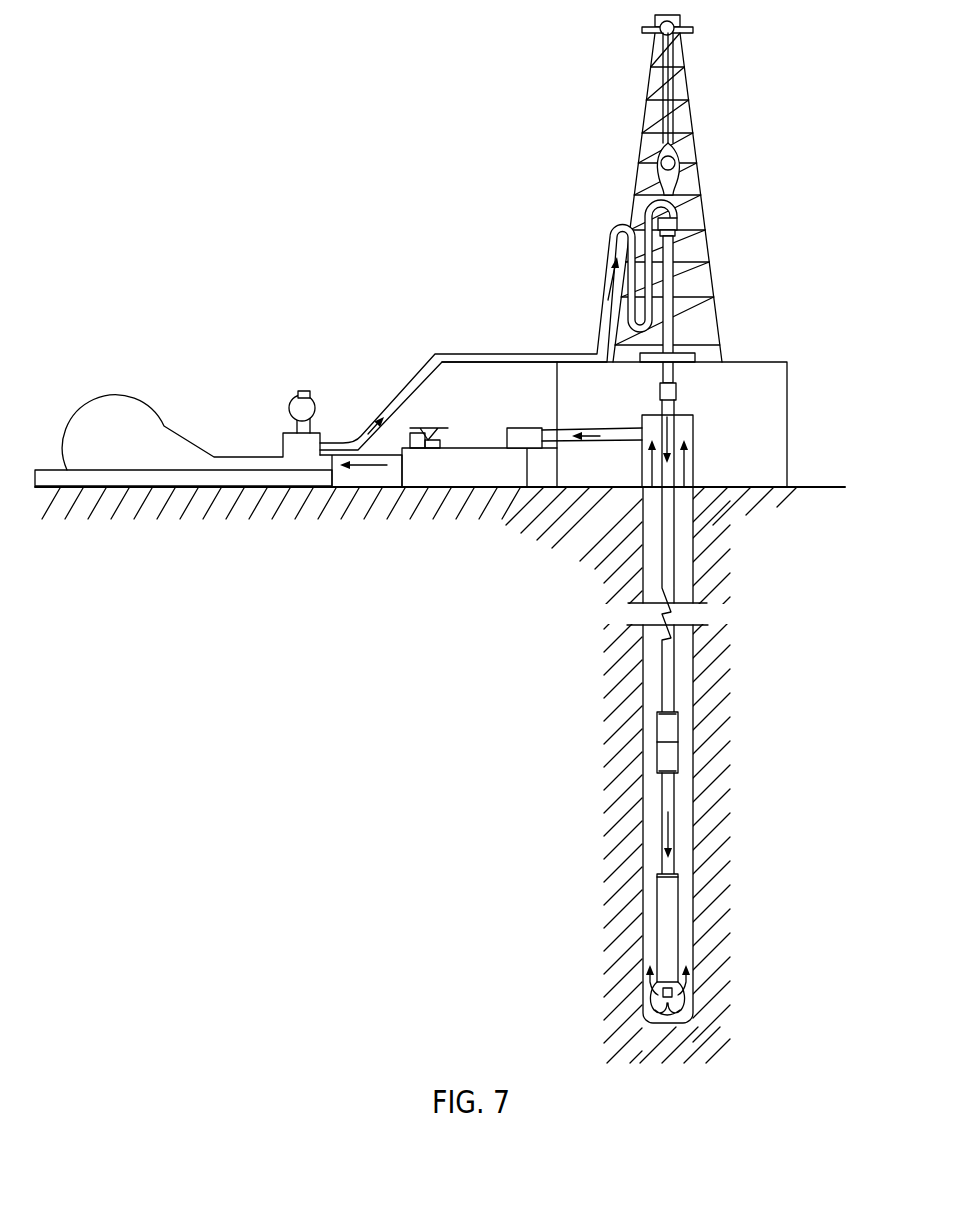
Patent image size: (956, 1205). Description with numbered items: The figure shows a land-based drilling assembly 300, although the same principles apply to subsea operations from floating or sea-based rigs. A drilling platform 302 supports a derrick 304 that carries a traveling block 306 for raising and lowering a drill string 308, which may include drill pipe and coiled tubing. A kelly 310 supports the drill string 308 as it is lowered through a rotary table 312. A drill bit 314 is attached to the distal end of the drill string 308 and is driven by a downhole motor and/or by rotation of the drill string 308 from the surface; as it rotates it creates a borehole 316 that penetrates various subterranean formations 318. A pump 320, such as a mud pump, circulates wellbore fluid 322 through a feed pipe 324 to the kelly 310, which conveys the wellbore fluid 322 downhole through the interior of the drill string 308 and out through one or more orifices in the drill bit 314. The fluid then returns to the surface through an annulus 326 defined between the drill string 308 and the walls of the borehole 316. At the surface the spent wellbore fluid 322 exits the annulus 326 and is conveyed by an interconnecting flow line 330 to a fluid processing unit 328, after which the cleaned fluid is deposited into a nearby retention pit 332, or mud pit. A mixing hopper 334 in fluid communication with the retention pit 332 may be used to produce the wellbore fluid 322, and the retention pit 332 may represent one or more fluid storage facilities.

The drilling assembly 300 is at (396, 92).
The drilling platform 302 is at (788, 382).
The derrick 304 is at (697, 113).
The traveling block 306 is at (680, 158).
The drill string 308 is at (670, 560).
The kelly 310 is at (668, 275).
The rotary table 312 is at (695, 358).
The drill bit 314 is at (690, 993).
The borehole 316 is at (695, 675).
The subterranean formations 318 is at (537, 759).
The pump 320 is at (130, 452).
The wellbore fluid 322 is at (338, 446).
The feed pipe 324 is at (437, 352).
The annulus 326 is at (683, 828).
The fluid processing unit 328 is at (510, 437).
The flow line 330 is at (626, 443).
The retention pit 332 is at (507, 470).
The mixing hopper 334 is at (417, 440).